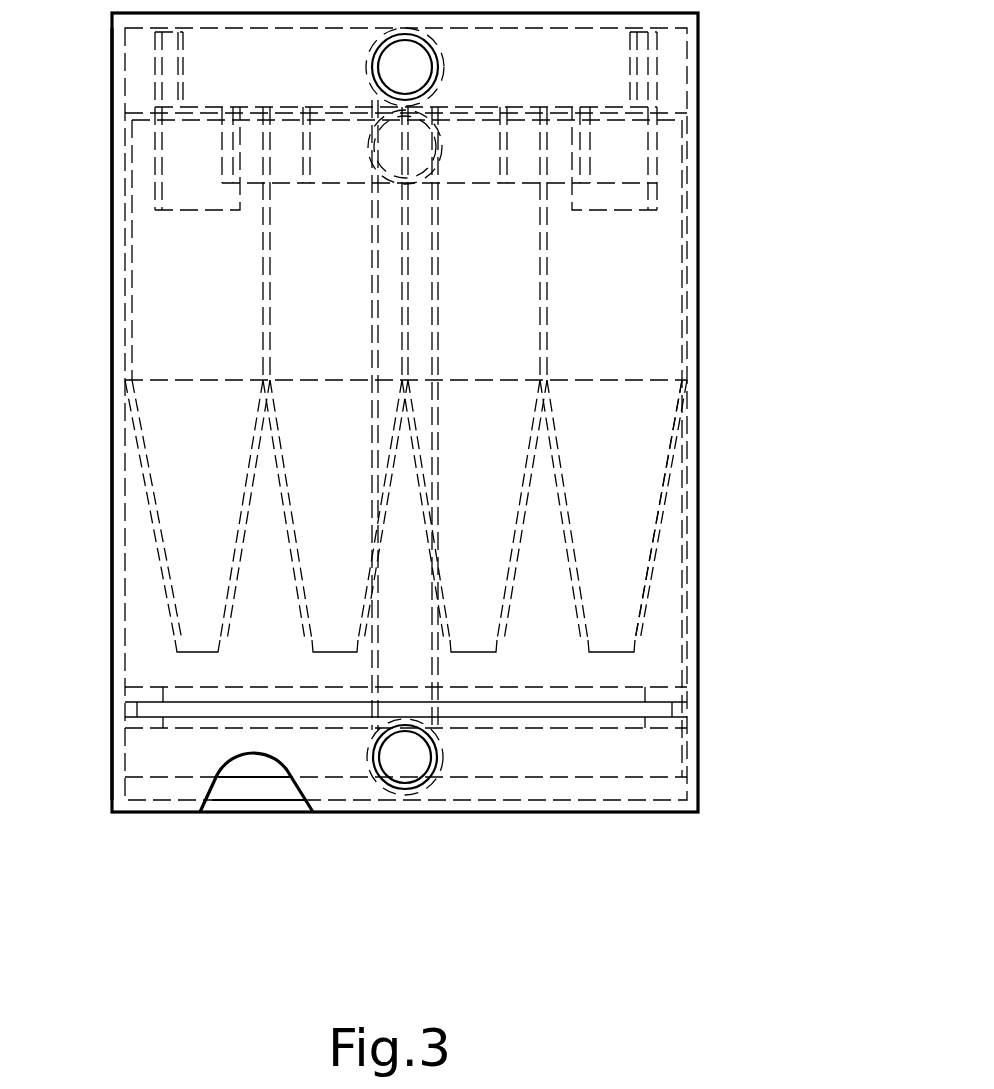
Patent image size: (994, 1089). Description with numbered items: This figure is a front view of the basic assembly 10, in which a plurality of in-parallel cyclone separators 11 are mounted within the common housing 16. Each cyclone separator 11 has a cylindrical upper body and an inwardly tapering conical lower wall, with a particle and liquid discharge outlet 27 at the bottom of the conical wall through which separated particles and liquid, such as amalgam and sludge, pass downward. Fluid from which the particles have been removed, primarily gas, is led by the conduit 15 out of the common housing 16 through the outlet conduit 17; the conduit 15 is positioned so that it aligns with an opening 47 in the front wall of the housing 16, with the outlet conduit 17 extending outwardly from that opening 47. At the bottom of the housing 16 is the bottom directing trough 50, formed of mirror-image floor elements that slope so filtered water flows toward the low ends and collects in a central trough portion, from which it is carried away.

The assembly 10 is at (763, 141).
The cyclone separator 11 is at (547, 350).
The conduit 15 is at (430, 658).
The common housing 16 is at (112, 223).
The outlet conduit 17 is at (408, 770).
The particle discharge outlet 27 is at (200, 652).
The opening 47 is at (442, 763).
The bottom directing trough 50 is at (237, 827).